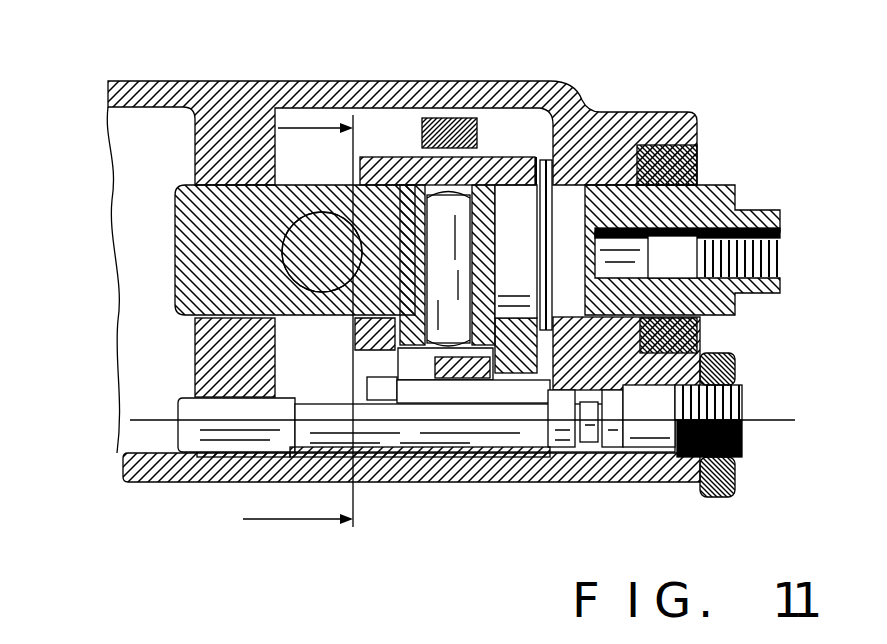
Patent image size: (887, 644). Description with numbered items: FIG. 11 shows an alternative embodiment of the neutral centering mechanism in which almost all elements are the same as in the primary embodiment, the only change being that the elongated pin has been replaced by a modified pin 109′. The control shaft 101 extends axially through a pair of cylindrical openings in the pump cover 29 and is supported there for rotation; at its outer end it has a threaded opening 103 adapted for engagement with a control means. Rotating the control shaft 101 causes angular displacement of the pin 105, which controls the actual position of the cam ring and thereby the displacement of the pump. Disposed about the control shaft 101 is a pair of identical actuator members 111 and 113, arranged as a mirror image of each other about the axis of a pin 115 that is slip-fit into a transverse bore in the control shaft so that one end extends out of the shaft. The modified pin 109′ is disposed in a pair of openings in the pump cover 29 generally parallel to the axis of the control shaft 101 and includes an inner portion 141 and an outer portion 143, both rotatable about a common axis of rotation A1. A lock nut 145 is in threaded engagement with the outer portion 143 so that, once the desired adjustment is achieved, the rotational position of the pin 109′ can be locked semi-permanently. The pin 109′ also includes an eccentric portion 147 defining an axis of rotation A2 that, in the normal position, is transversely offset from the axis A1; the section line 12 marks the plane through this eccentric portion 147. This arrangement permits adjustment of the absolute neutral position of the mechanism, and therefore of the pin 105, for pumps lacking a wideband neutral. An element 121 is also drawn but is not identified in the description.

The pump cover 29 is at (175, 93).
The control shaft 101 is at (185, 262).
The threaded opening 103 is at (780, 265).
The pin 105 is at (290, 252).
The modified pin 109′ is at (553, 462).
The actuator member 111 is at (400, 165).
The actuator member 113 is at (520, 160).
The pin 115 is at (455, 292).
The seal 121 is at (432, 140).
The inner portion 141 is at (207, 445).
The outer portion 143 is at (715, 407).
The lock nut 145 is at (717, 497).
The eccentric portion 147 is at (405, 457).
The section line 12- 12 is at (295, 330).
The axis of rotation A1 is at (780, 421).
The axis of rotation A2 is at (455, 432).